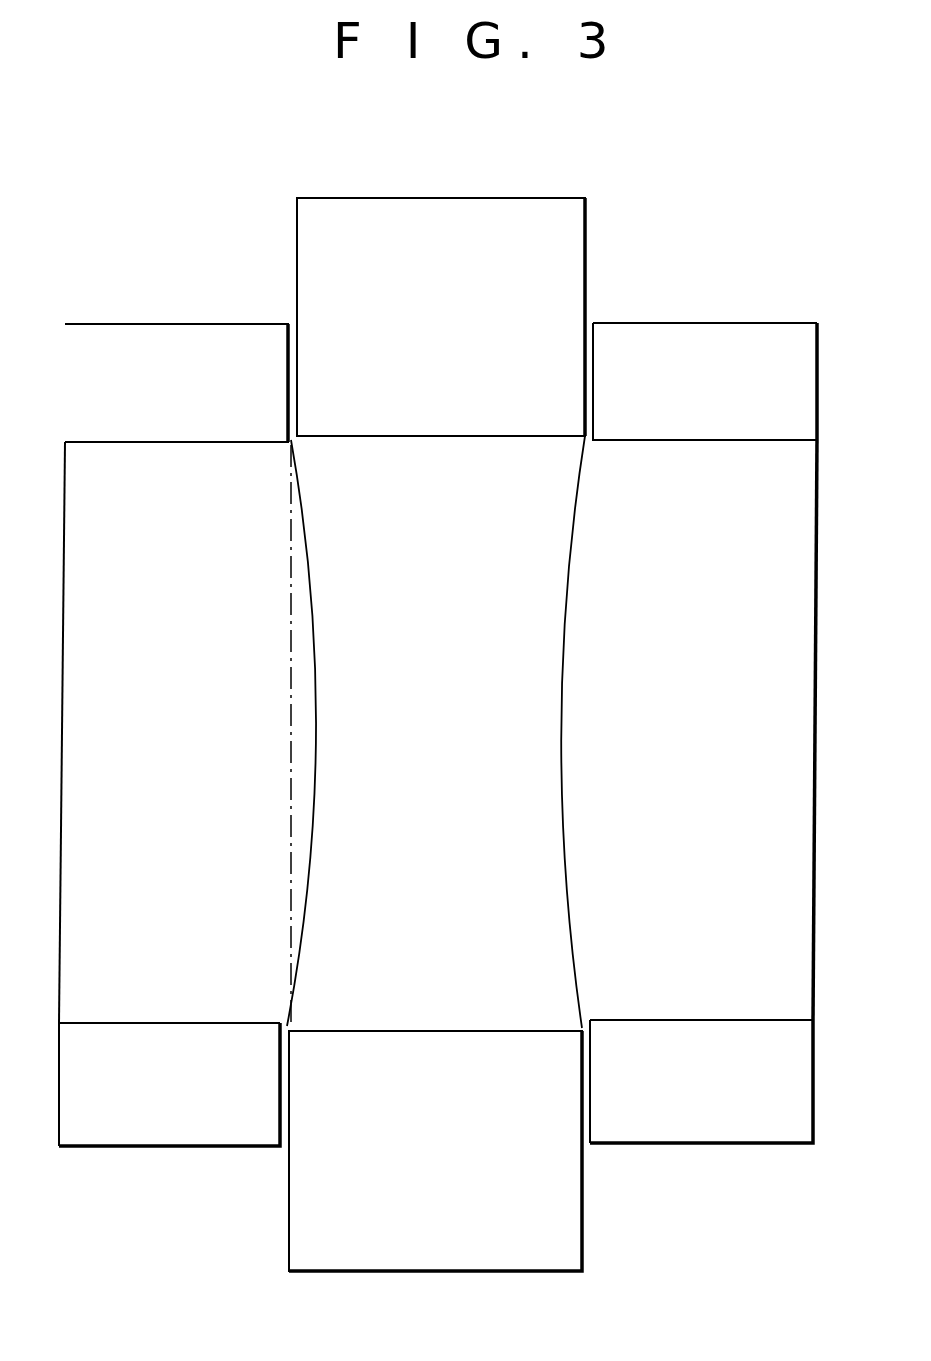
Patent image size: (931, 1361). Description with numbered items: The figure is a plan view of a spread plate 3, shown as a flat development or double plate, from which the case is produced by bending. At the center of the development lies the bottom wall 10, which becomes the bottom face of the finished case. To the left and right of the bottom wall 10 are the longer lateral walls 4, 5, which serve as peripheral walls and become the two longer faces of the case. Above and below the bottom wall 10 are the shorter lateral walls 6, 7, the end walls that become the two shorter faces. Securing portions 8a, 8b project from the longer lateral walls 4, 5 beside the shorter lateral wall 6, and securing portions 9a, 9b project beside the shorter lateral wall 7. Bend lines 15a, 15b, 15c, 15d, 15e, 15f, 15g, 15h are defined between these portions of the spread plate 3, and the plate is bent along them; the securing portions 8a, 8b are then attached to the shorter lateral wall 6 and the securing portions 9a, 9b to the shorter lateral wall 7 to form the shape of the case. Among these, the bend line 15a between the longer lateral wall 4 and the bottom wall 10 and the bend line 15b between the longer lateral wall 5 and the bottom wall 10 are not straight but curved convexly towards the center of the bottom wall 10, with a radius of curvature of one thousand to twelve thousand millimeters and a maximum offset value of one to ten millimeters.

The spread plate 3 is at (603, 300).
The longer lateral wall 4 is at (185, 752).
The longer lateral wall 5 is at (708, 752).
The shorter lateral wall 6 is at (453, 325).
The shorter lateral wall 7 is at (453, 1170).
The securing portion 8a is at (192, 399).
The securing portion 8b is at (721, 399).
The securing portion 9a is at (184, 1102).
The securing portion 9b is at (716, 1100).
The bottom wall 10 is at (413, 747).
The bend line 15a is at (318, 683).
The bend line 15b is at (561, 683).
The bend line 15c is at (442, 437).
The bend line 15d is at (442, 1030).
The bend line 15e is at (177, 445).
The bend line 15f is at (712, 441).
The bend line 15g is at (168, 1022).
The bend line 15h is at (695, 1019).